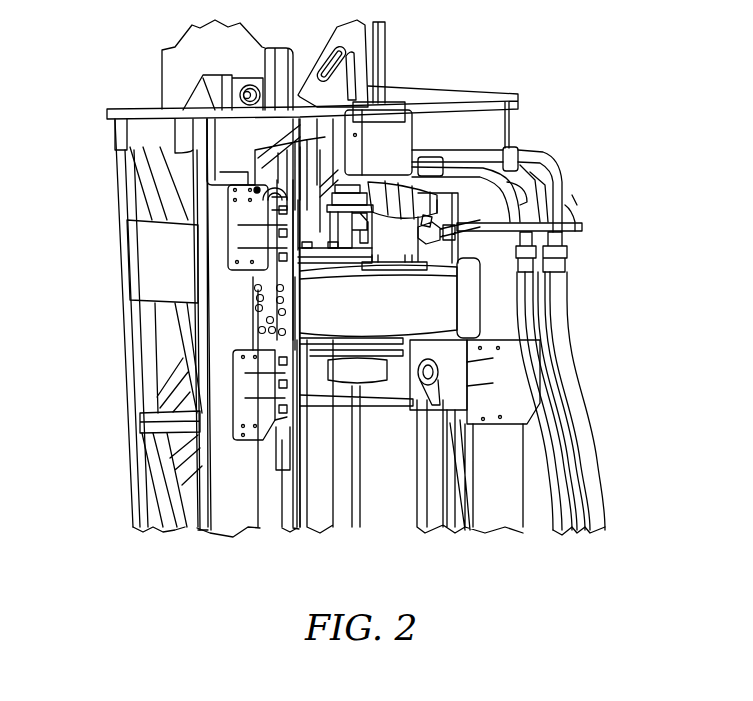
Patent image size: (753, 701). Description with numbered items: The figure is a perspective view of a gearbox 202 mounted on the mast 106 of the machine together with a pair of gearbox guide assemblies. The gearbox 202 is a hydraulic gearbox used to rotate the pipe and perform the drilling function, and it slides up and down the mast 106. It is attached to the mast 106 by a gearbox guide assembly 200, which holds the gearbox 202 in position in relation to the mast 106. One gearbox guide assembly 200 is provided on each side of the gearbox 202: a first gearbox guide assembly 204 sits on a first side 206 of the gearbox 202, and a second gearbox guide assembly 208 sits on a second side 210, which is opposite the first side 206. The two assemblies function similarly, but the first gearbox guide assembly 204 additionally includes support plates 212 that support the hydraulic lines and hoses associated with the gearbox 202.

The mast 106 is at (210, 228).
The gearbox guide assembly 200 is at (578, 212).
The gearbox 202 is at (425, 307).
The first gearbox guide assembly 204 is at (585, 225).
The first side 206 is at (515, 142).
The second gearbox guide assembly 208 is at (220, 253).
The second side 210 is at (272, 174).
The support plates 212 is at (574, 218).